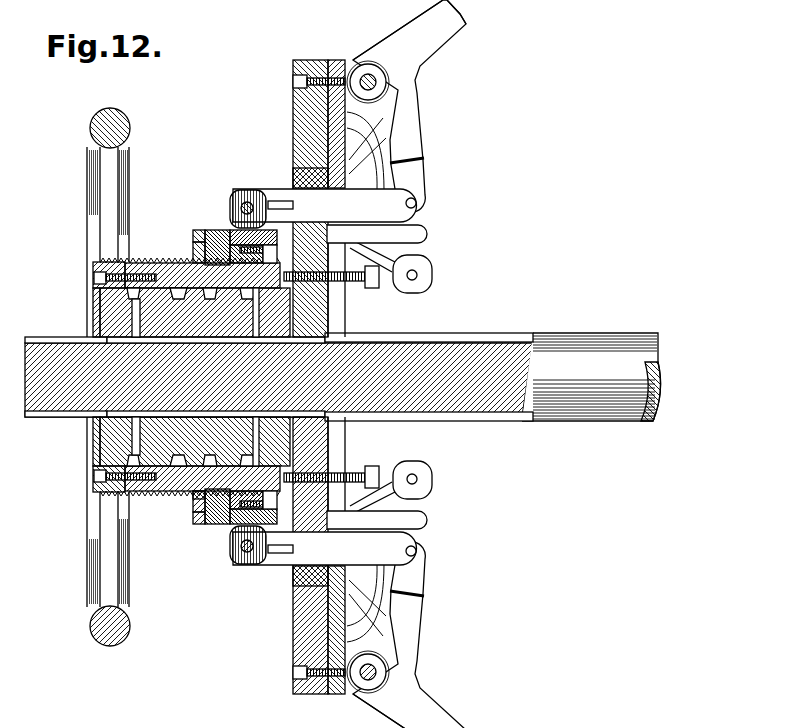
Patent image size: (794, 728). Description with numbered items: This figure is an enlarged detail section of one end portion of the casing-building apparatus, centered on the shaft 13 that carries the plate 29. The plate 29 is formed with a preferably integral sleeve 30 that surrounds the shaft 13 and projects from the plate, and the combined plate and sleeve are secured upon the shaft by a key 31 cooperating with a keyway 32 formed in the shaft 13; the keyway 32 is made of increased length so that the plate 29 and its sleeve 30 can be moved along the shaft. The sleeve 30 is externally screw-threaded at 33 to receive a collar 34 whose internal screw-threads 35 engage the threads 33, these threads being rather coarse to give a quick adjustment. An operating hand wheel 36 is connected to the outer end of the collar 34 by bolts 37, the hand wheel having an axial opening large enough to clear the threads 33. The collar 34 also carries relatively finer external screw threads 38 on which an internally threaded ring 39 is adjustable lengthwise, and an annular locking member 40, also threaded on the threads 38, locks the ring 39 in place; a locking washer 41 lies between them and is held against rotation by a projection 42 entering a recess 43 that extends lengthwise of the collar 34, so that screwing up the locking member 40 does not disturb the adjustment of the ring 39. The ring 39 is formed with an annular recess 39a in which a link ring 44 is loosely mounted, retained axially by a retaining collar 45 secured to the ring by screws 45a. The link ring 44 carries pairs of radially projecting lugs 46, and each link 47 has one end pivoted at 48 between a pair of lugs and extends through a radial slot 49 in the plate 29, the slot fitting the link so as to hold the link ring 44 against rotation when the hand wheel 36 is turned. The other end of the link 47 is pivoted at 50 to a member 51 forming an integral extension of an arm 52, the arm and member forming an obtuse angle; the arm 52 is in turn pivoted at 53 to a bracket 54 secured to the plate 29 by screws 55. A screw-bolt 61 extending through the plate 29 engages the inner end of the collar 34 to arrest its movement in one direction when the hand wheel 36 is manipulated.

The shaft 13 is at (343, 377).
The plate 29 is at (295, 105).
The sleeve 30 is at (110, 312).
The key 31 is at (318, 337).
The keyway 32 is at (450, 334).
The external screw-threads of sleeve 33 is at (96, 460).
The collar 34 is at (179, 494).
The internal screw-threads of collar 35 is at (200, 494).
The hand wheel 36 is at (92, 580).
The bolt 37 is at (92, 279).
The external screw threads of collar 38 is at (148, 494).
The ring 39 is at (220, 230).
The annular recess 39a is at (230, 524).
The locking member 40 is at (199, 230).
The locking washer 41 is at (193, 240).
The projection 42 is at (194, 266).
The recess 43 is at (165, 260).
The link ring 44 is at (262, 245).
The retaining collar 45 is at (283, 553).
The screw 45a is at (281, 500).
The lug 46 is at (258, 557).
The link 47 is at (360, 458).
The pivot connection 48 is at (248, 192).
The slot 49 is at (296, 183).
The pivot connection 50 is at (417, 203).
The member 51 is at (407, 126).
The arm 52 is at (425, 18).
The pivot connection 53 is at (369, 62).
The bracket 54 is at (333, 62).
The screw 55 is at (293, 82).
The screw-bolt 61 is at (372, 288).